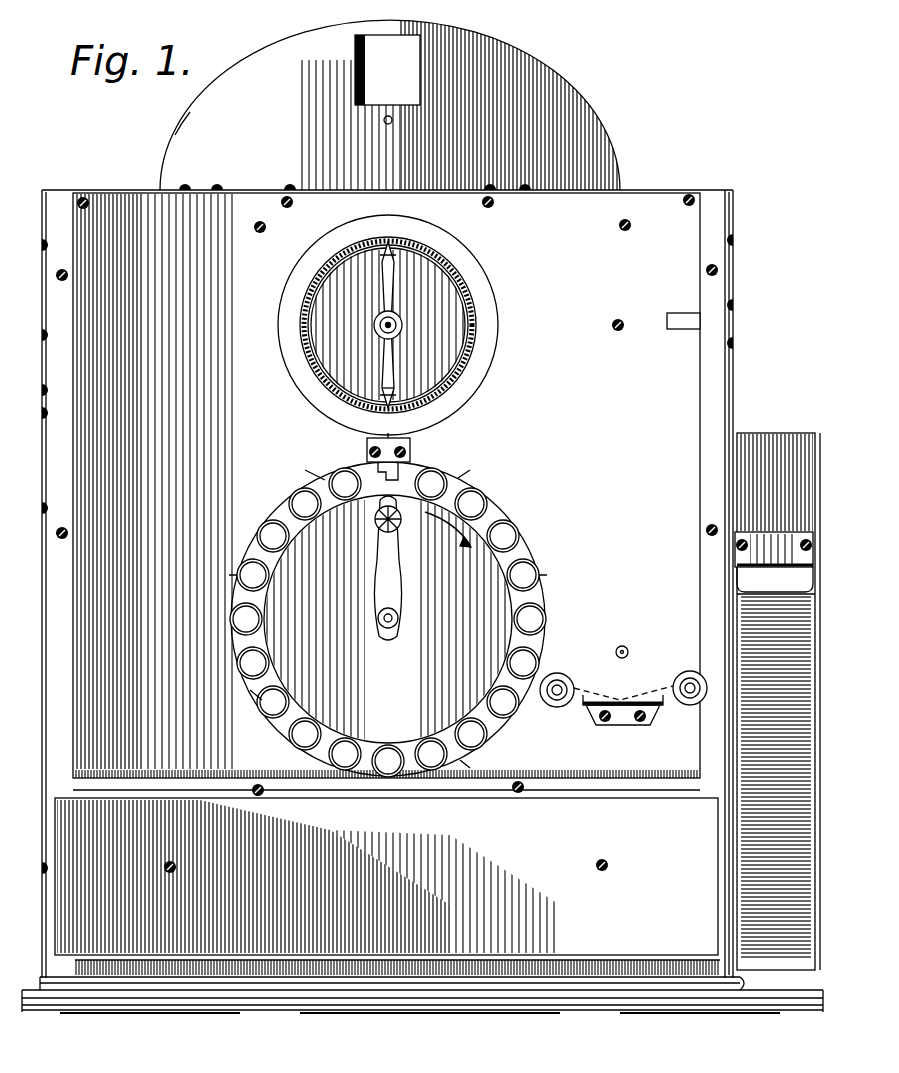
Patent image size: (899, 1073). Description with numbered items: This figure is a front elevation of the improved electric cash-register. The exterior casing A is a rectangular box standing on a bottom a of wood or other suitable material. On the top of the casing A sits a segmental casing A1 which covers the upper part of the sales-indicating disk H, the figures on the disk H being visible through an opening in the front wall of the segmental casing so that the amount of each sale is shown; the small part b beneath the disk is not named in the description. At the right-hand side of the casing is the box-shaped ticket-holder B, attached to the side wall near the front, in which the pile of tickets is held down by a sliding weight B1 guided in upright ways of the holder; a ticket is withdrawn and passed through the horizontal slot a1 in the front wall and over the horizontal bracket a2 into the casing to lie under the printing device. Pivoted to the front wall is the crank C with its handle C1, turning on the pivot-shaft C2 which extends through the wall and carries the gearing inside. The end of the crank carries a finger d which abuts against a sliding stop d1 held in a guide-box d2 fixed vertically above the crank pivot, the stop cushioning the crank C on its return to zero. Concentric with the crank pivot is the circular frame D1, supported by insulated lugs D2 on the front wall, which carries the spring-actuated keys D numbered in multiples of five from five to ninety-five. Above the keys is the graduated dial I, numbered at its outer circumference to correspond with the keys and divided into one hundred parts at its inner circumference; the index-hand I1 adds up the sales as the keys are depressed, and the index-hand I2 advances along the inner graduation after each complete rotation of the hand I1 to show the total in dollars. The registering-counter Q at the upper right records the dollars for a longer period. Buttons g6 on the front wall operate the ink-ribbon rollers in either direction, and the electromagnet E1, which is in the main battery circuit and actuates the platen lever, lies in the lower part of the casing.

The exterior casing A is at (372, 200).
The segmental casing A1 is at (190, 128).
The sales-indicating disk H is at (415, 55).
The pointer under indicator b is at (408, 97).
The graduated dial I is at (290, 308).
The index-hand I1 is at (393, 368).
The index-hand I2 is at (392, 272).
The spring-actuated keys D is at (498, 498).
The circular frame D1 is at (300, 492).
The lugs D2 is at (478, 773).
The crank C is at (394, 550).
The handle C1 is at (380, 525).
The pivot-shaft C2 is at (388, 630).
The finger d is at (380, 503).
The sliding stop d1 is at (368, 455).
The guide-box d2 is at (398, 427).
The buttons g6 is at (559, 700).
The horizontal slot a1 is at (624, 703).
The horizontal bracket a2 is at (632, 722).
The registering-counter Q is at (672, 313).
The ticket-holder B is at (793, 434).
The sliding weight B1 is at (813, 550).
The electromagnet E1 is at (386, 876).
The bottom a is at (42, 988).